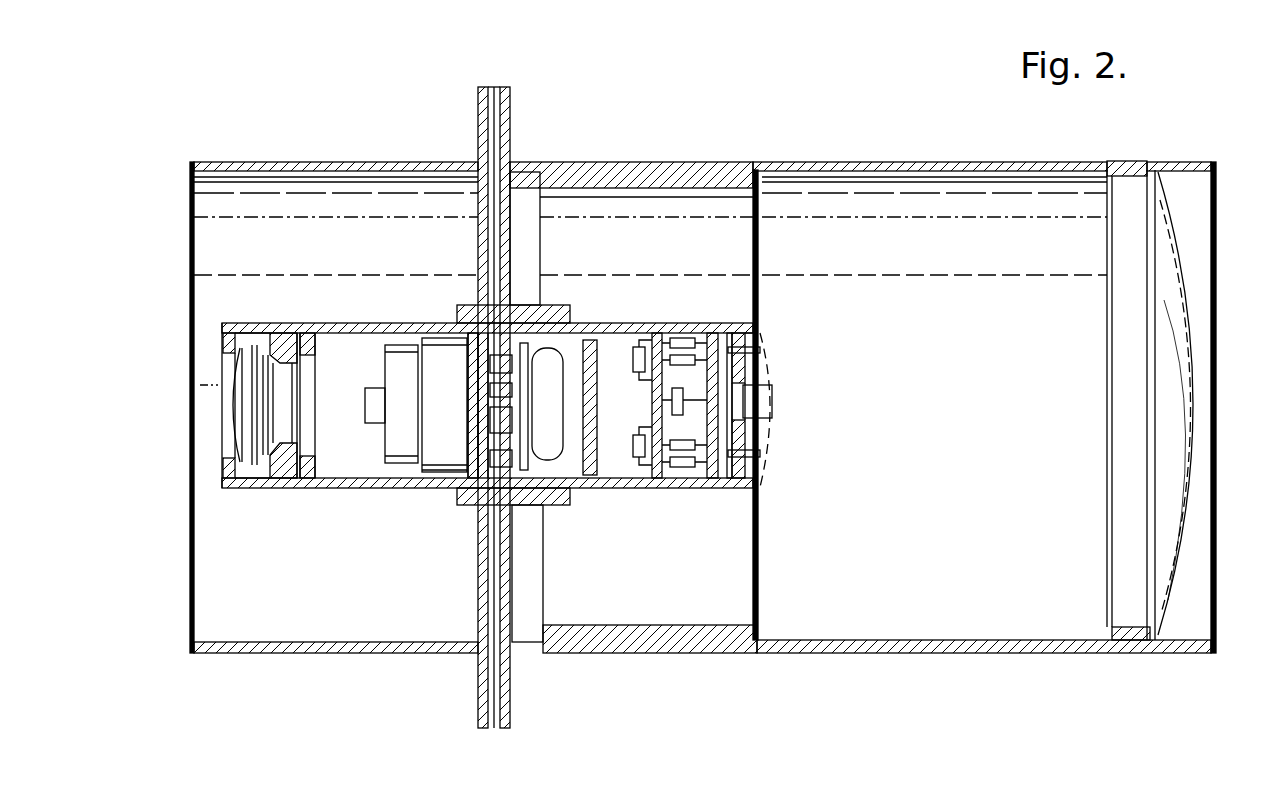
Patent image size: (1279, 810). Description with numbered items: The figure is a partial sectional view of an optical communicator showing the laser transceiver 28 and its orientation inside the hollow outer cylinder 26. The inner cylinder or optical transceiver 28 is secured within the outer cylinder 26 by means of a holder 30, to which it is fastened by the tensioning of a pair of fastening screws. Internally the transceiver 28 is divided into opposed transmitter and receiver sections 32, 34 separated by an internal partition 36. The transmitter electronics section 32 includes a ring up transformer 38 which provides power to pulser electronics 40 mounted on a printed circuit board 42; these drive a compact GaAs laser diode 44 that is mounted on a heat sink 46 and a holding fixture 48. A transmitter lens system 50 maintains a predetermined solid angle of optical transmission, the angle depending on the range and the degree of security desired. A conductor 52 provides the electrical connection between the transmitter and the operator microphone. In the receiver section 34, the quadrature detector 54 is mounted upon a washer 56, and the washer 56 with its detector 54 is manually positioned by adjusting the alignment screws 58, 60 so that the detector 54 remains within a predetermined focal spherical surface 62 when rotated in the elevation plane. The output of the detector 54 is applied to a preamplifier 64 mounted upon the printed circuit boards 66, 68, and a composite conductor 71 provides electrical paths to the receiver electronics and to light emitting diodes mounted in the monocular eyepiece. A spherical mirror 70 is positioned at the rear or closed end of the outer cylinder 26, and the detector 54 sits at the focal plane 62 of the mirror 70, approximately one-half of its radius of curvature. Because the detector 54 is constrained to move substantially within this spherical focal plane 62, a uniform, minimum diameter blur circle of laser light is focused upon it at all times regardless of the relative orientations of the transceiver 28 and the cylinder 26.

The outer cylinder 26 is at (713, 171).
The laser transceiver 28 is at (298, 323).
The holder 30 is at (547, 500).
The transmitter section 32 is at (345, 559).
The receiver section 34 is at (661, 537).
The internal partition 36 is at (600, 472).
The ring up transformer 38 is at (554, 360).
The pulser electronics 40 is at (520, 330).
The printed circuit board 42 is at (482, 478).
The GaAs laser diode 44 is at (375, 424).
The heat sink 46 is at (385, 345).
The holding fixture 48 is at (430, 473).
The transmitter lens system 50 is at (232, 462).
The conductor 52 is at (494, 730).
The quadrature detector 54 is at (772, 402).
The washer 56 is at (747, 320).
The alignment screw 58 is at (763, 348).
The alignment screw 60 is at (763, 453).
The focal spherical surface 62 is at (758, 480).
The preamplifier 64 is at (705, 470).
The printed circuit board 66 is at (650, 397).
The printed circuit board 68 is at (728, 480).
The spherical mirror 70 is at (1192, 478).
The composite conductor 71 is at (494, 87).